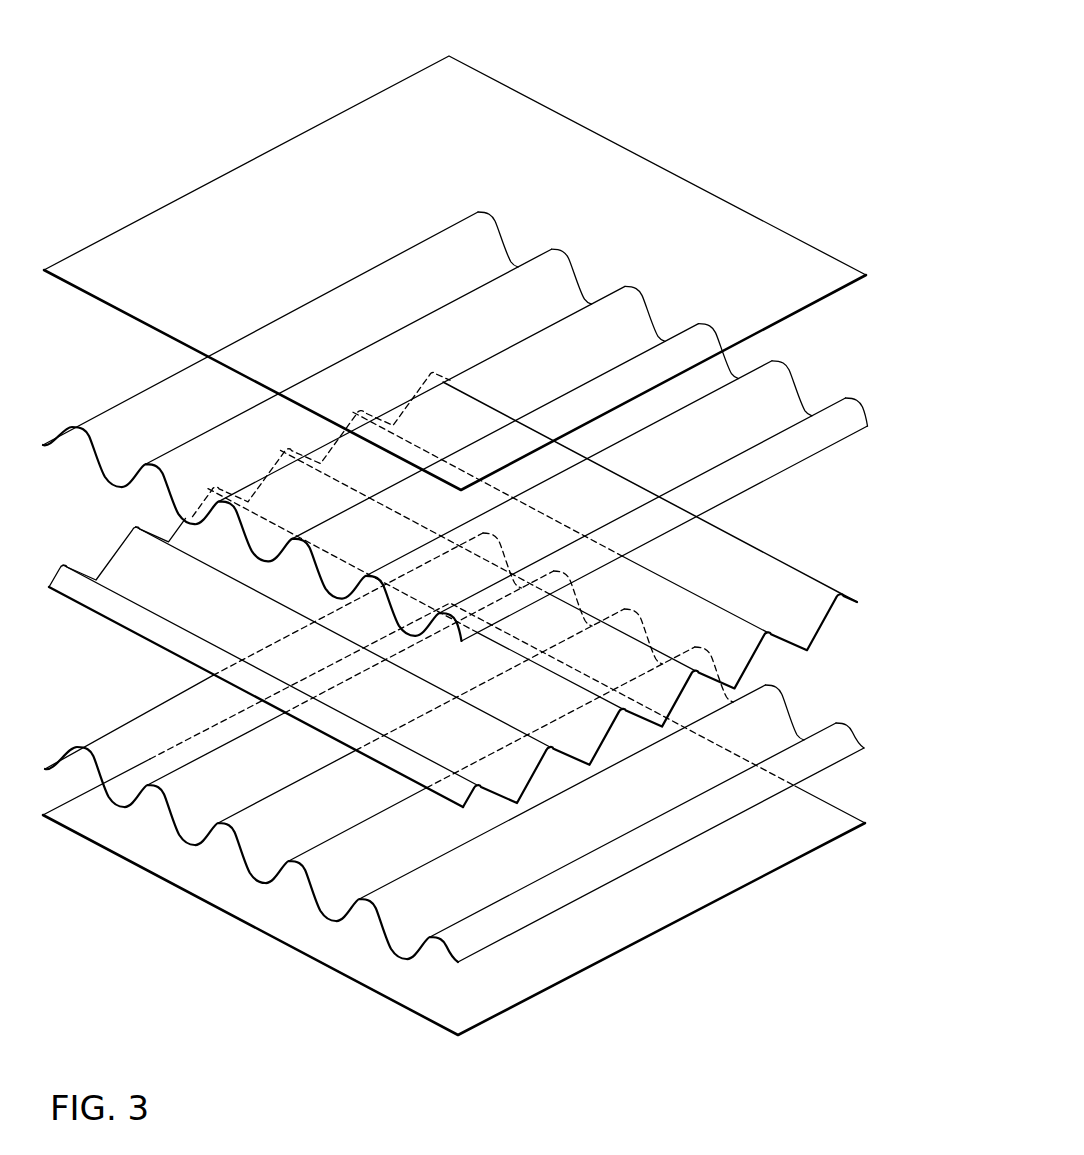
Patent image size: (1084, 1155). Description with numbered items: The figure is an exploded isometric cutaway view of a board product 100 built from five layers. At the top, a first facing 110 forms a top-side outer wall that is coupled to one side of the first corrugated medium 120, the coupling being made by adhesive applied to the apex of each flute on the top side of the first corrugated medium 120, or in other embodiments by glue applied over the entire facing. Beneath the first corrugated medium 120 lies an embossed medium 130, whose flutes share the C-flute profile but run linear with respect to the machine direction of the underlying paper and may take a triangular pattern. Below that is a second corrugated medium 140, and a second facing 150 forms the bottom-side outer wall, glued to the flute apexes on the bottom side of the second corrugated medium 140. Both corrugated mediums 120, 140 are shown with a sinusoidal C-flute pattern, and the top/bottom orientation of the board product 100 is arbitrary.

The board product 100 is at (774, 88).
The first facing 110 is at (868, 274).
The first corrugated medium 120 is at (852, 451).
The embossed medium 130 is at (870, 585).
The second corrugated medium 140 is at (836, 786).
The second facing 150 is at (820, 873).